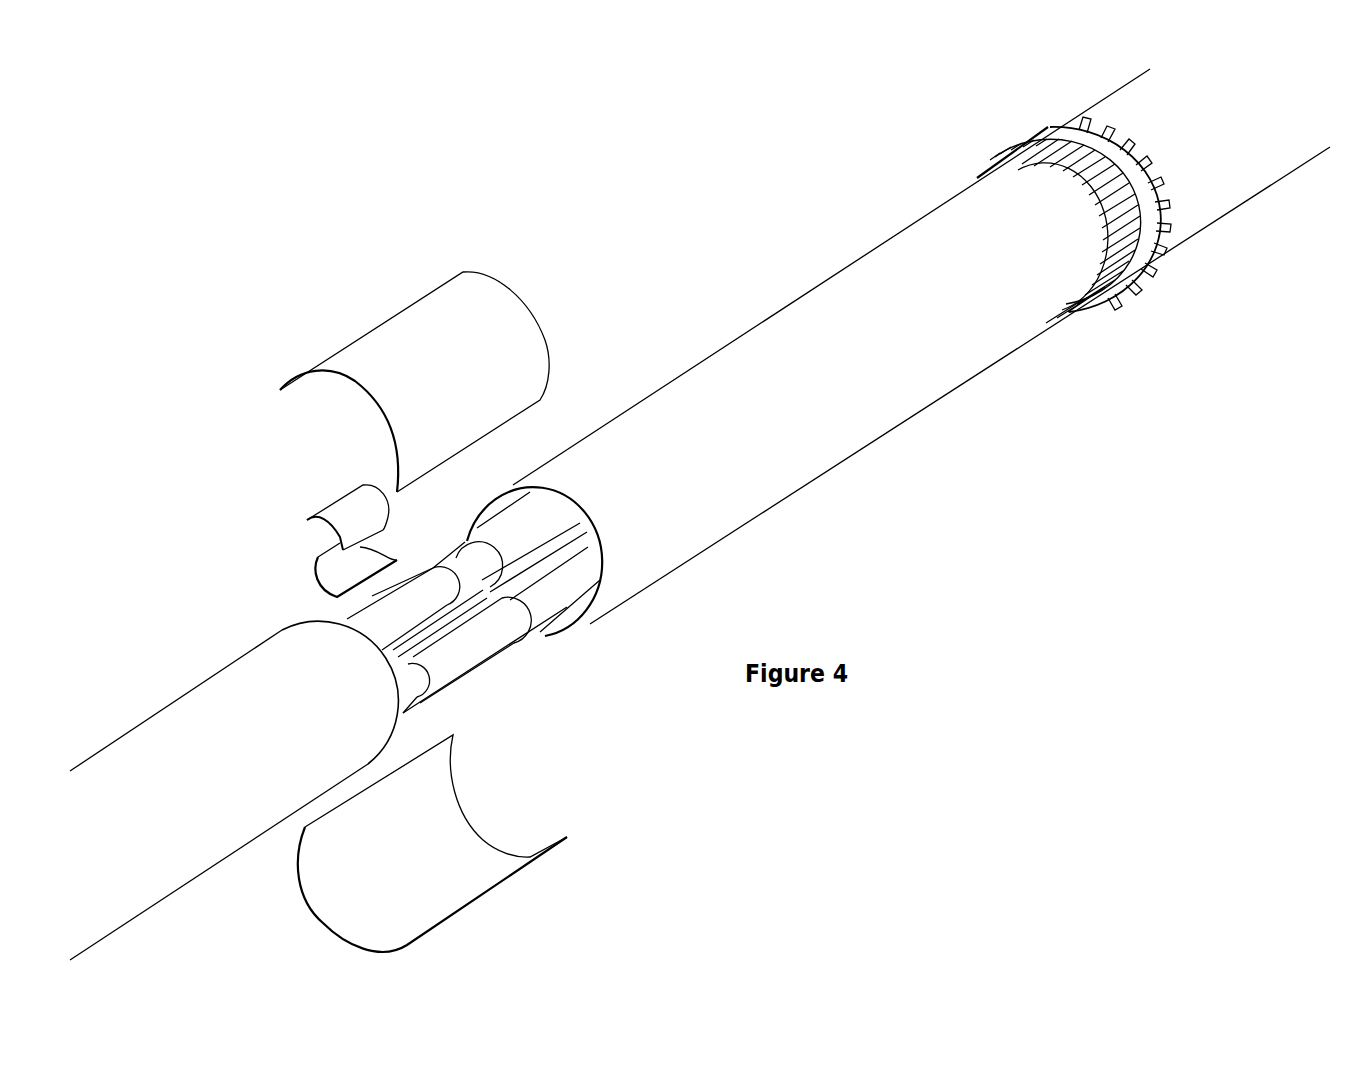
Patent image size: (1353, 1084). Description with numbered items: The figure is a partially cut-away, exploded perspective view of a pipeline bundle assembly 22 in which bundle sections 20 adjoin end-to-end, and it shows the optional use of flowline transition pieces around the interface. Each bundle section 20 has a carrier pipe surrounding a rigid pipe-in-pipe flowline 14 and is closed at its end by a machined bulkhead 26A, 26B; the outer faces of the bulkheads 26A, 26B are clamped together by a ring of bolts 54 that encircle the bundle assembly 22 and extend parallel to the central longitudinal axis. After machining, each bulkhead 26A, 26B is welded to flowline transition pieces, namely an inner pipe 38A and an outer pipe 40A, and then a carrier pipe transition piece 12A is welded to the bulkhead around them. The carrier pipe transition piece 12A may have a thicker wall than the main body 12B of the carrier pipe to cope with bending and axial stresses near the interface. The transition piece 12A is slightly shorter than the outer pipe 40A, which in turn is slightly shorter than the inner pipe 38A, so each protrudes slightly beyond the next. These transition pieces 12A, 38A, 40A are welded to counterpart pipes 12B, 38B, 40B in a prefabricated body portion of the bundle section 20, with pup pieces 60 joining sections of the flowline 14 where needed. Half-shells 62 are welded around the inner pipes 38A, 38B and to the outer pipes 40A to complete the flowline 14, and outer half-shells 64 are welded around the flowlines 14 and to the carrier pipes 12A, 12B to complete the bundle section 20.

The carrier pipe transition piece 12A is at (758, 357).
The main body of the carrier pipe 12B is at (210, 698).
The flowline 14 is at (513, 667).
The bundle section 20 is at (928, 439).
The pipeline bundle assembly 22 is at (946, 101).
The bulkhead 26A is at (1070, 130).
The bulkhead 26B is at (1057, 143).
The inner pipe of the flowline transition piece 38A is at (462, 567).
The inner pipe 38B is at (443, 580).
The outer pipe of the flowline transition piece 40A is at (540, 530).
The outer pipe 40B is at (398, 612).
The bolts 54 is at (1163, 235).
The pup piece 60 is at (477, 650).
The half-shell 62 is at (350, 508).
The outer half-shell 64 is at (398, 323).